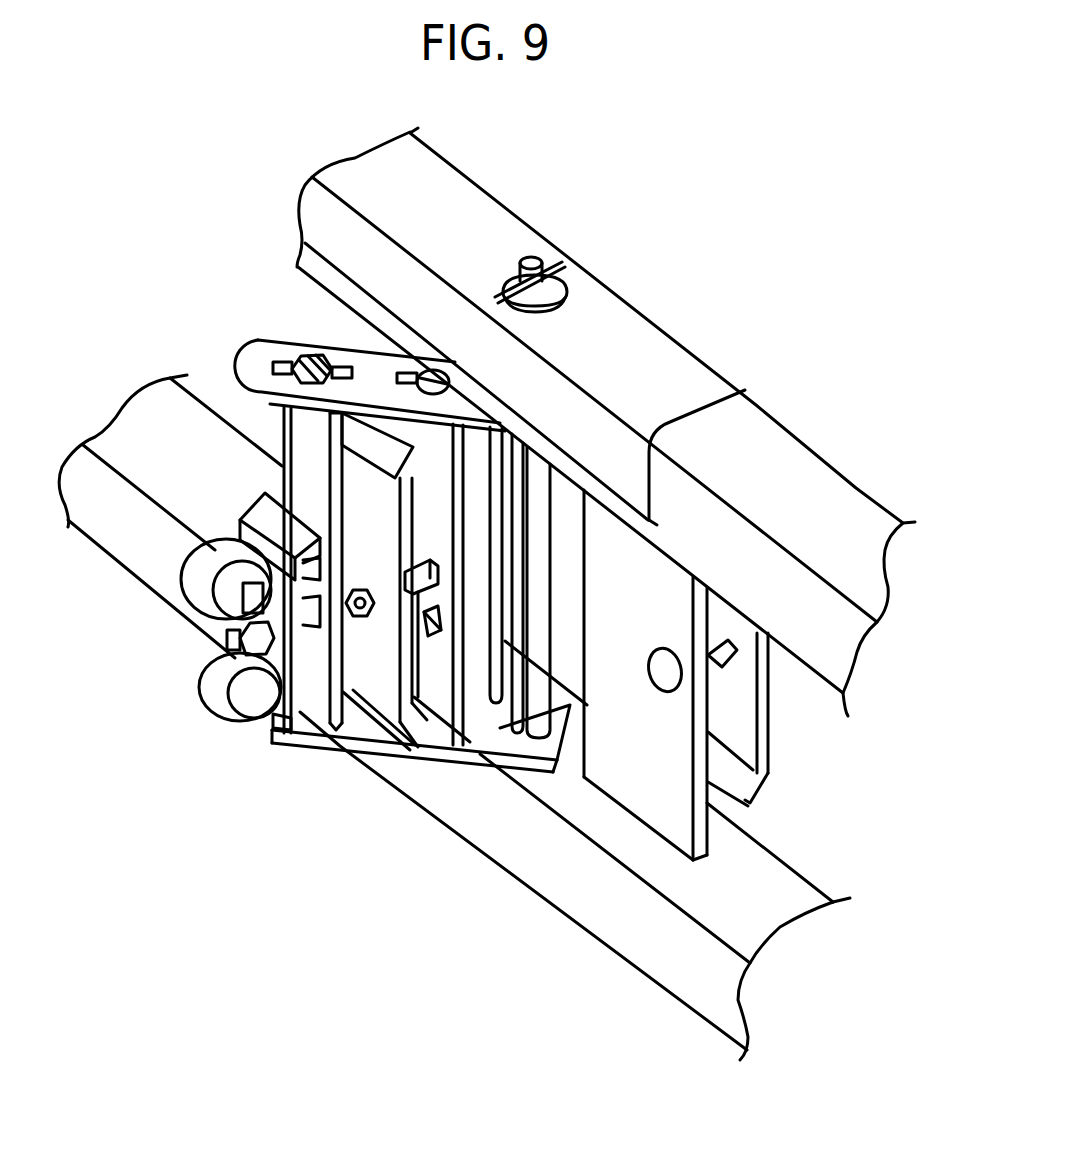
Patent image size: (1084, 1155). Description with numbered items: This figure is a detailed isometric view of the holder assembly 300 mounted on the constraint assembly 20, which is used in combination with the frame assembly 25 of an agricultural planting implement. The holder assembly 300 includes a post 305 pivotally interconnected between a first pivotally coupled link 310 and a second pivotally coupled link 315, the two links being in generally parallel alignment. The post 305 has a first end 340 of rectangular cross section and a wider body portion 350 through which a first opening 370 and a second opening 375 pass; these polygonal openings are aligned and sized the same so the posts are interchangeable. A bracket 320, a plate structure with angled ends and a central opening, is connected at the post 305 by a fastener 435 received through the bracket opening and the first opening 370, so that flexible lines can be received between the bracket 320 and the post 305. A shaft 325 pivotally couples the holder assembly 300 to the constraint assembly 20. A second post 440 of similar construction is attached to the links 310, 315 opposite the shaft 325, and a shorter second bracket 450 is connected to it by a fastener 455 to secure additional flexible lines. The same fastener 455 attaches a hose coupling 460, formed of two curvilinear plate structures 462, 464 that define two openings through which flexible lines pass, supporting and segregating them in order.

The constraint assembly 20 is at (857, 468).
The frame assembly 25 is at (630, 252).
The holder assembly 300 is at (281, 785).
The post 305 is at (432, 648).
The first pivotally coupled link 310 is at (260, 343).
The second pivotally coupled link 315 is at (280, 743).
The bracket 320 is at (382, 693).
The shaft 325 is at (540, 617).
The first end 340 is at (437, 372).
The body portion 350 is at (462, 546).
The first opening 370 is at (439, 553).
The second opening 375 is at (441, 660).
The fastener 435 is at (418, 757).
The second post 440 is at (360, 700).
The second bracket 450 is at (278, 710).
The fastener 455 is at (208, 644).
The hose coupling 460 is at (188, 698).
The plate structure 462 is at (190, 575).
The plate structure 464 is at (213, 702).